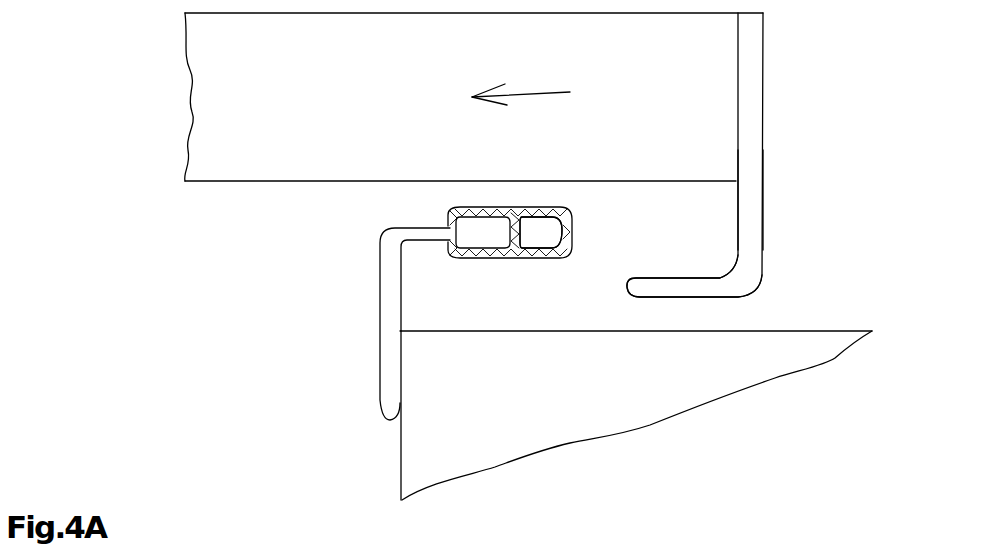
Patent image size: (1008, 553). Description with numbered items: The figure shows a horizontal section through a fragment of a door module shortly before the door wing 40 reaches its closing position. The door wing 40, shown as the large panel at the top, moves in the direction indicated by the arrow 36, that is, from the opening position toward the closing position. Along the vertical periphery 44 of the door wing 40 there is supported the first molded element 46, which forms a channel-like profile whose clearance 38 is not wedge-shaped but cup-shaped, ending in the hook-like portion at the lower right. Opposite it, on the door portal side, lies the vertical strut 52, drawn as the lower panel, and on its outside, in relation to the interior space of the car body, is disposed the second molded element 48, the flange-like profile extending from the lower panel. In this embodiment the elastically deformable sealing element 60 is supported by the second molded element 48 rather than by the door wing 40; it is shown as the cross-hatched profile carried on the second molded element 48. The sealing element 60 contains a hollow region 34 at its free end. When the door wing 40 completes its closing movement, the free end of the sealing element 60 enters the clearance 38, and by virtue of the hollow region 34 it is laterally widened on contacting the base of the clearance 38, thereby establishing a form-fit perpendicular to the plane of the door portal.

The hollow region 34 is at (548, 231).
The arrow 36 is at (528, 89).
The clearance 38 is at (695, 225).
The door wing 40 is at (266, 157).
The vertical periphery 44 is at (716, 80).
The first molded element 46 is at (750, 195).
The second molded element 48 is at (390, 290).
The vertical strut 52 is at (773, 370).
The sealing element 60 is at (524, 258).